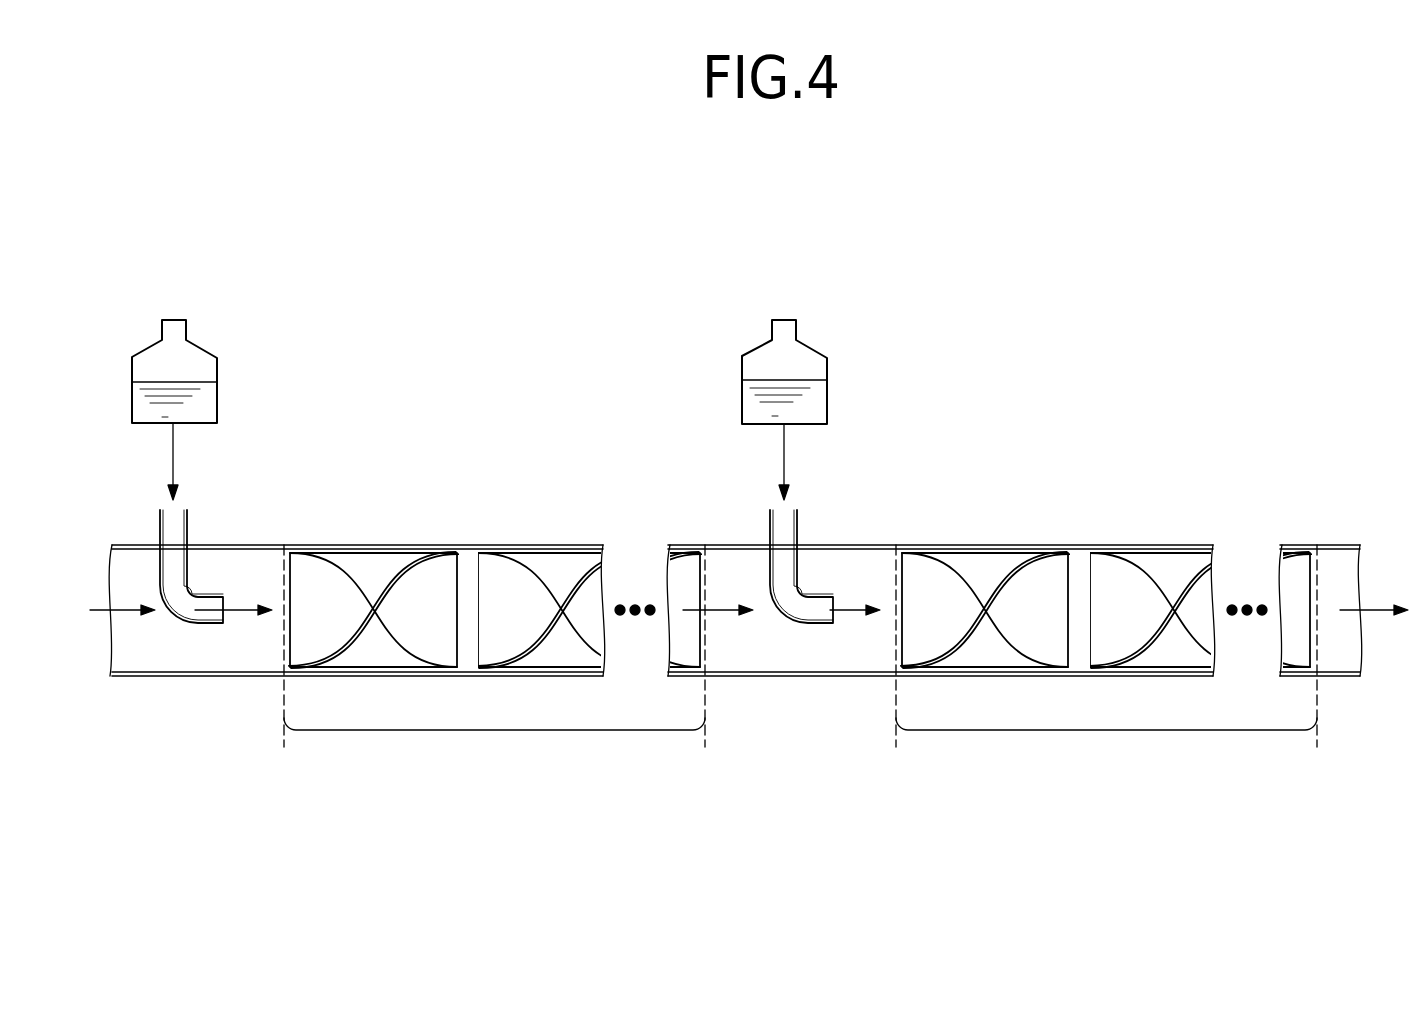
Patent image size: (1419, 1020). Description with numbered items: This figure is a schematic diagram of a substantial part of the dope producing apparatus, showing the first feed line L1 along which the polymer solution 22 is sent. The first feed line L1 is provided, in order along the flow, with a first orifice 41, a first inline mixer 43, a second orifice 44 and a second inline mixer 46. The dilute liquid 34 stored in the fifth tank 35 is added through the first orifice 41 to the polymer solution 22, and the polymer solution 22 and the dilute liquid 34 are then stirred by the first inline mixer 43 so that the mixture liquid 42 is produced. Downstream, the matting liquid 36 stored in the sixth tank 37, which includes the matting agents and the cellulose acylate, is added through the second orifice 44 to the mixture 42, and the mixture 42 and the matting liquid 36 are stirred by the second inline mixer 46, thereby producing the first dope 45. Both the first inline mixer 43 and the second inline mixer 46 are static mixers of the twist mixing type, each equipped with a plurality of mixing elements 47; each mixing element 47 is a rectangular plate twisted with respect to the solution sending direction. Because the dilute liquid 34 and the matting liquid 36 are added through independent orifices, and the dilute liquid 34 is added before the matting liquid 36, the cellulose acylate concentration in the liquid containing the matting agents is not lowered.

The polymer solution 22 is at (137, 648).
The dilute liquid 34 is at (207, 406).
The fifth tank 35 is at (201, 397).
The matting liquid 36 is at (817, 405).
The sixth tank 37 is at (812, 397).
The first orifice 41 is at (224, 600).
The mixture liquid 42 is at (750, 648).
The first inline mixer 43 is at (495, 730).
The second orifice 44 is at (834, 600).
The first dope 45 is at (1348, 648).
The second inline mixer 46 is at (1105, 730).
The mixing element 47 is at (306, 648).
The first feed line L1 is at (1080, 348).